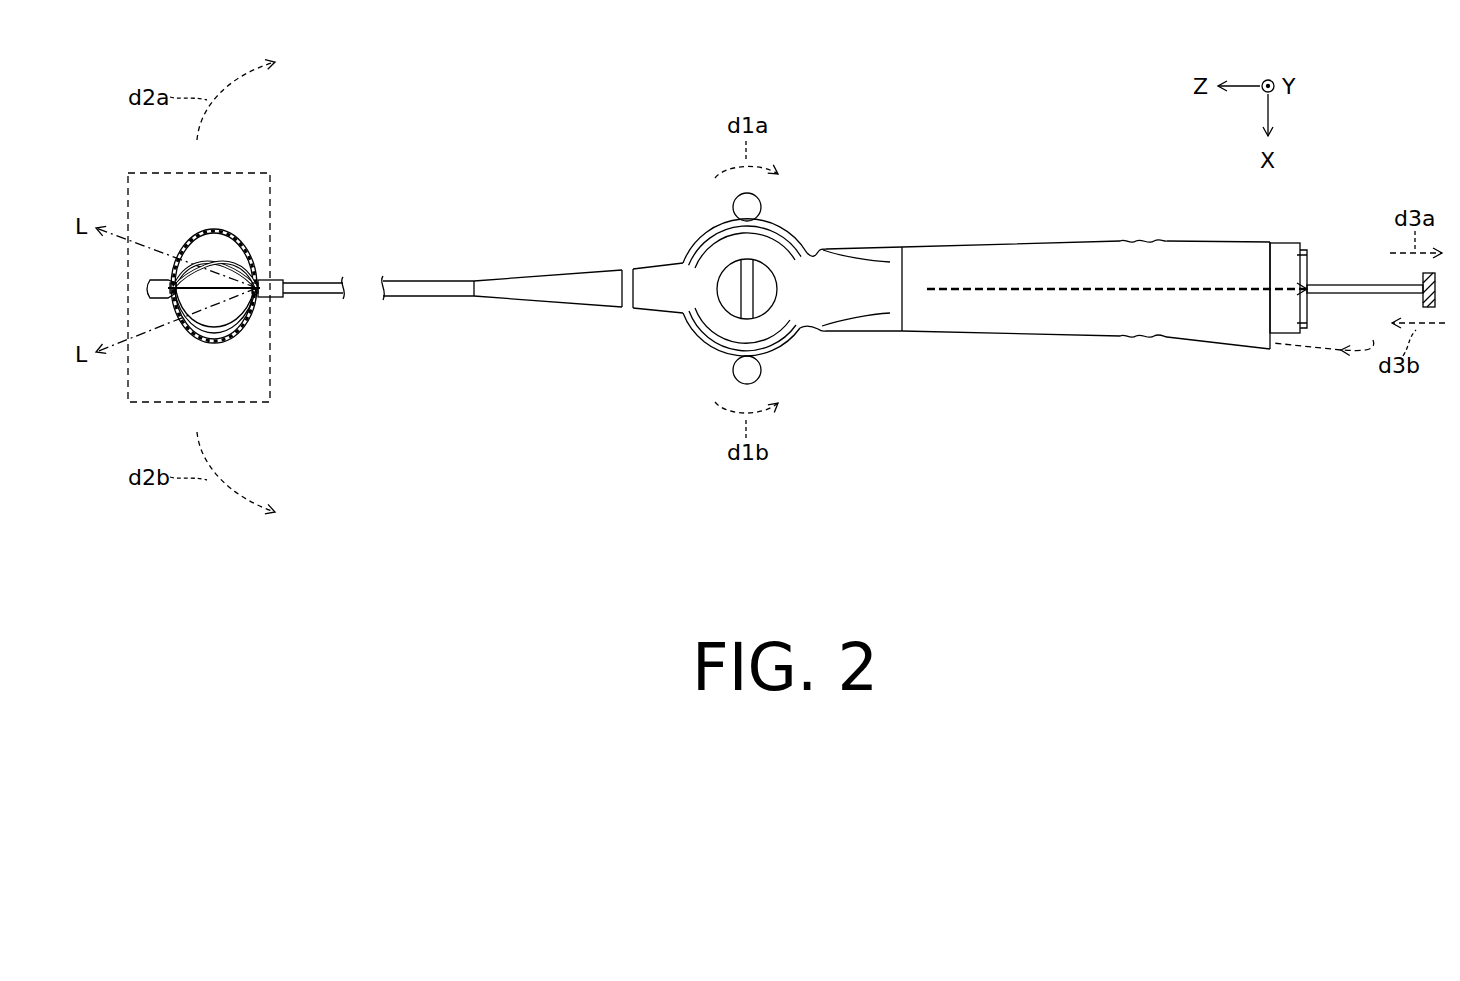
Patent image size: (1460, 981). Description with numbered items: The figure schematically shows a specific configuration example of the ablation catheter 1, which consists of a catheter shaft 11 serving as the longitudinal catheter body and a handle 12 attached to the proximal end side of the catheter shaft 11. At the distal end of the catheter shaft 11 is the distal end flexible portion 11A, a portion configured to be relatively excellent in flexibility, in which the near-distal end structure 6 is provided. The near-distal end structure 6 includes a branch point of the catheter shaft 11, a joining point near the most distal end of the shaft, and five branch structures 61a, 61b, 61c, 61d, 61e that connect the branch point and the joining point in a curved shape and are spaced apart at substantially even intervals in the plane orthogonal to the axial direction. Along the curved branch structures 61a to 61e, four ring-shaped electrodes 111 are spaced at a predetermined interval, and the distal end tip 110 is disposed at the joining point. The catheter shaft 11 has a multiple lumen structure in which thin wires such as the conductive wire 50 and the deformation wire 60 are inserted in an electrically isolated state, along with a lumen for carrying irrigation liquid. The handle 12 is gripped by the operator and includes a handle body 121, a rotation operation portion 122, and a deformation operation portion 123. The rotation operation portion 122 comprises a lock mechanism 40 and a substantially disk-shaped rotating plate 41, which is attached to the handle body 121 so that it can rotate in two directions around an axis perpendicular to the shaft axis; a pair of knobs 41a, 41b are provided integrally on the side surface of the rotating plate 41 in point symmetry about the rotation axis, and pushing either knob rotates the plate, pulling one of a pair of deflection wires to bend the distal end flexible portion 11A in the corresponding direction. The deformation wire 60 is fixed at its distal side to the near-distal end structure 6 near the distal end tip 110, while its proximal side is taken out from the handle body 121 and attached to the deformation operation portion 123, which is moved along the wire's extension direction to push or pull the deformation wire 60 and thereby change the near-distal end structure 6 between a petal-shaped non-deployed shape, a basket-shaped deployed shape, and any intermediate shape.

The ablation catheter 1 is at (527, 90).
The near-distal end structure 6 is at (128, 253).
The catheter shaft 11 is at (425, 286).
The distal end flexible portion 11A is at (380, 166).
The handle 12 is at (1160, 124).
The lock mechanism 40 is at (730, 300).
The rotating plate 41 is at (765, 234).
The knob 41a is at (745, 208).
The knob 41b is at (745, 371).
The conductive wire 50 is at (1313, 352).
The deformation wire 60 is at (243, 296).
The branch structure 61a is at (257, 242).
The branch structure 61b is at (199, 258).
The branch structure 61c is at (258, 325).
The branch structure 61d is at (180, 336).
The branch structure 61e is at (219, 258).
The distal end tip 110 is at (150, 290).
The electrode 111 is at (232, 232).
The handle body 121 is at (1126, 258).
The rotation operation portion 122 is at (874, 165).
The deformation operation portion 123 is at (1430, 310).